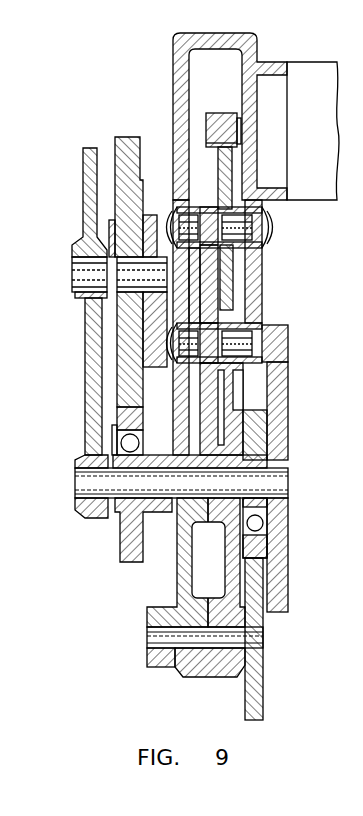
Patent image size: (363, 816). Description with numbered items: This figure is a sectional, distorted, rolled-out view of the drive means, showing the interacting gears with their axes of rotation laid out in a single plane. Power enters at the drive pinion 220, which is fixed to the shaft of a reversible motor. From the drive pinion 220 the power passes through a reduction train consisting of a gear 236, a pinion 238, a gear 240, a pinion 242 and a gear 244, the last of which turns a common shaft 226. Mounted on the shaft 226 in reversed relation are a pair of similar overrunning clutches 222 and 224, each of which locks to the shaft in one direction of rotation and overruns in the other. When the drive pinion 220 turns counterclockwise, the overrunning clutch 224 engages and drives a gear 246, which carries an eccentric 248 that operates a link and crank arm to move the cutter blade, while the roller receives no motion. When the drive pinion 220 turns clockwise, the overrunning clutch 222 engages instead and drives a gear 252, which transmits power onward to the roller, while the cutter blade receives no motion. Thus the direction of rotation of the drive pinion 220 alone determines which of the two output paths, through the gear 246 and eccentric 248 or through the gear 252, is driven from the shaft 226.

The drive pinion 220 is at (226, 120).
The overrunning clutch 222 is at (258, 551).
The overrunning clutch 224 is at (118, 547).
The common shaft 226 is at (286, 483).
The gear 236 is at (229, 165).
The pinion 238 is at (208, 212).
The gear 240 is at (212, 283).
The pinion 242 is at (288, 340).
The gear 244 is at (284, 400).
The gear 246 is at (128, 142).
The eccentric 248 is at (155, 221).
The gear 252 is at (263, 662).